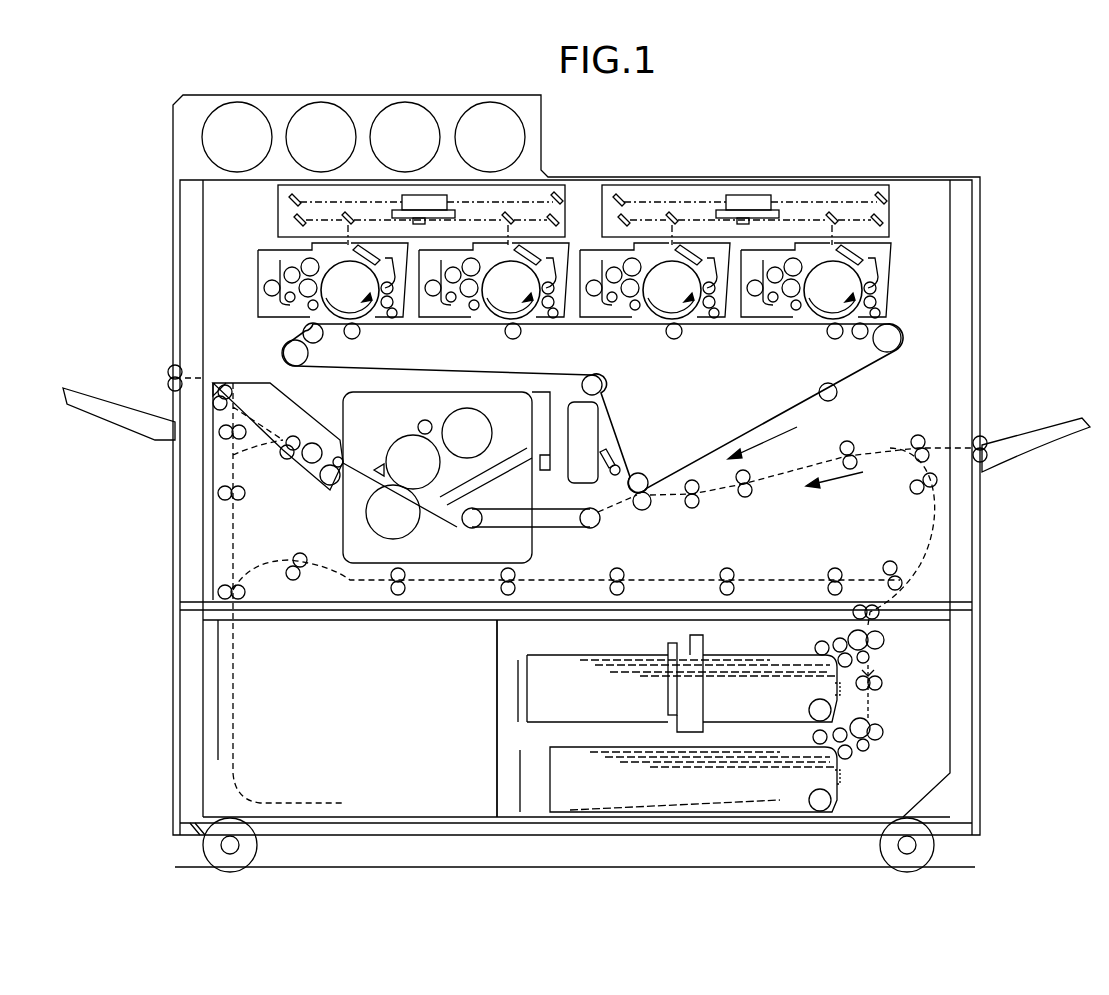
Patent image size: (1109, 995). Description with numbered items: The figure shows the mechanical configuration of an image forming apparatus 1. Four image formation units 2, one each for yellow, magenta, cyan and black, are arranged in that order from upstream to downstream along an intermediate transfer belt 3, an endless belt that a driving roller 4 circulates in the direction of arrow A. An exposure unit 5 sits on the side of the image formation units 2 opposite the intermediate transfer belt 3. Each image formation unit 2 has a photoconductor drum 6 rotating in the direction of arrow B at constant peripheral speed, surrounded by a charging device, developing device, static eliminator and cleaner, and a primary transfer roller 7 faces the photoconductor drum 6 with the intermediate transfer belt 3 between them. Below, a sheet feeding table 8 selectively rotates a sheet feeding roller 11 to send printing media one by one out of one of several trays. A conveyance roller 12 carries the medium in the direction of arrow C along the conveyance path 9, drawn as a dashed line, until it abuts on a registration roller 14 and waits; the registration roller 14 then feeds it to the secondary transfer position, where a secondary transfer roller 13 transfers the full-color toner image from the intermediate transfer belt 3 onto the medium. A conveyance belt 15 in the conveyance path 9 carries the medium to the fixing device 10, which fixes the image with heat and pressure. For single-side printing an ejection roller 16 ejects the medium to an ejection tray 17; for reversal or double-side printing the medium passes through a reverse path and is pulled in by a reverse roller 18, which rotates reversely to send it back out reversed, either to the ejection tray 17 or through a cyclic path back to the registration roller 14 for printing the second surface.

The image forming apparatus 1 is at (799, 92).
The image formation unit 2 is at (268, 248).
The intermediate transfer belt 3 is at (700, 460).
The driving roller 4 is at (897, 346).
The exposure unit 5 is at (278, 192).
The photoconductor drum 6 is at (382, 330).
The primary transfer roller 7 is at (360, 339).
The sheet feeding table 8 is at (510, 810).
The conveyance path 9 is at (935, 518).
The fixing device 10 is at (343, 511).
The sheet feeding roller 11 is at (818, 650).
The conveyance roller 12 is at (885, 640).
The secondary transfer roller 13 is at (640, 509).
The registration roller 14 is at (696, 507).
The conveyance belt 15 is at (522, 529).
The ejection roller 16 is at (170, 368).
The ejection tray 17 is at (135, 433).
The reverse roller 18 is at (245, 598).